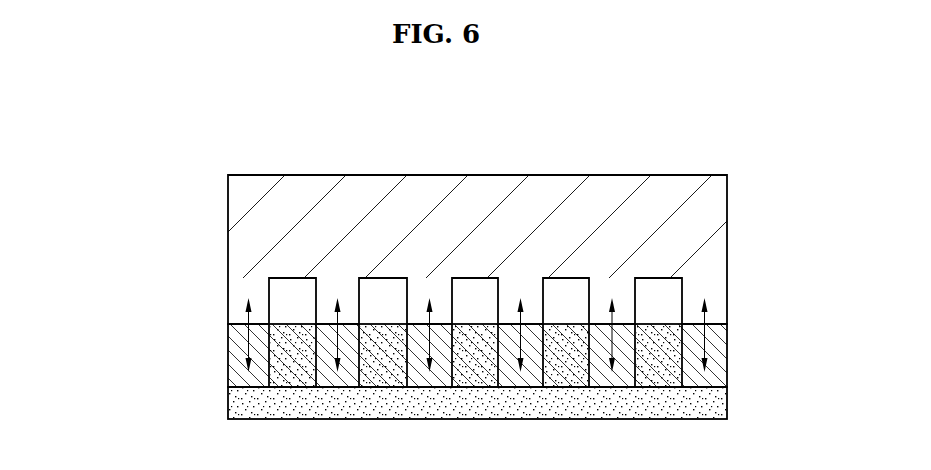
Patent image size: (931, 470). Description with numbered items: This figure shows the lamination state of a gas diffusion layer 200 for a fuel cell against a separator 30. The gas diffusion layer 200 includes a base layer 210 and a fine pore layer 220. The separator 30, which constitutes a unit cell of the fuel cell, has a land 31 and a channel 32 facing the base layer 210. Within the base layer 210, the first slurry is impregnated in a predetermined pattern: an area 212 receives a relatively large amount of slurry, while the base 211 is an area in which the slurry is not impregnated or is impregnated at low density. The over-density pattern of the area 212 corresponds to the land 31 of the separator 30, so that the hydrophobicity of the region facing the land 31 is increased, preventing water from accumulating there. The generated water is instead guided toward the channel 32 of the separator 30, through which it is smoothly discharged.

The separator 30 is at (603, 186).
The land 31 is at (482, 305).
The channel 32 is at (420, 278).
The gas diffusion layer 200 is at (429, 363).
The base layer 210 is at (437, 347).
The base 211 is at (247, 361).
The area 212 is at (292, 338).
The fine pore layer 220 is at (247, 405).